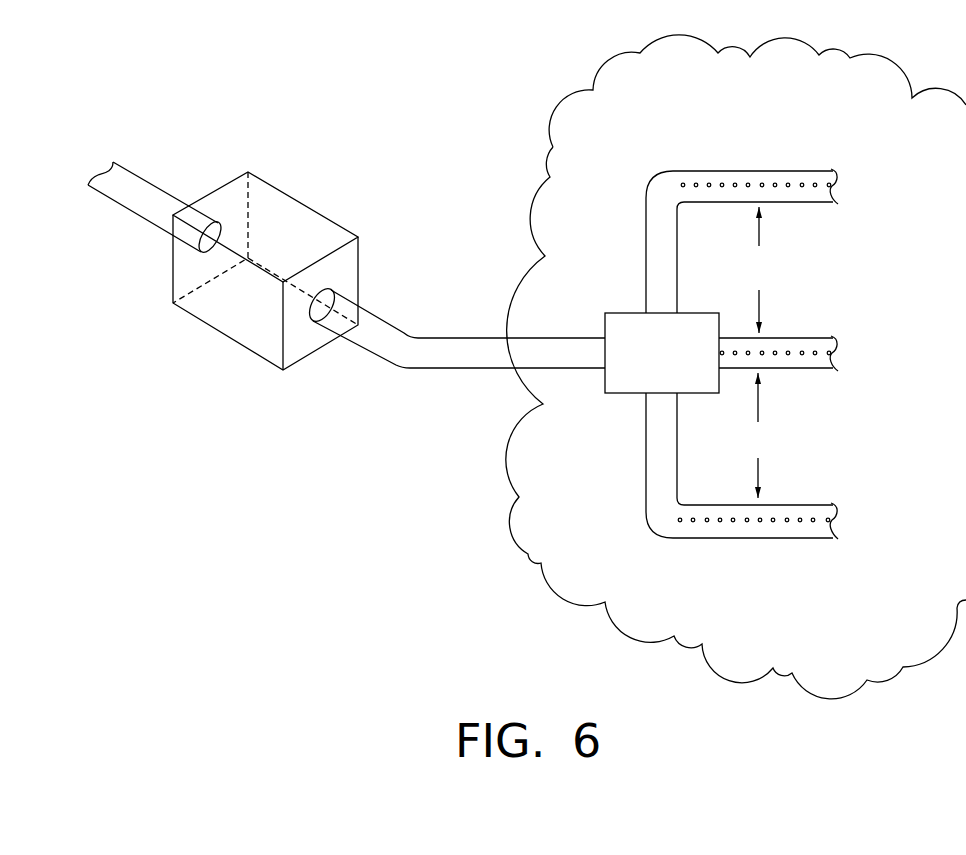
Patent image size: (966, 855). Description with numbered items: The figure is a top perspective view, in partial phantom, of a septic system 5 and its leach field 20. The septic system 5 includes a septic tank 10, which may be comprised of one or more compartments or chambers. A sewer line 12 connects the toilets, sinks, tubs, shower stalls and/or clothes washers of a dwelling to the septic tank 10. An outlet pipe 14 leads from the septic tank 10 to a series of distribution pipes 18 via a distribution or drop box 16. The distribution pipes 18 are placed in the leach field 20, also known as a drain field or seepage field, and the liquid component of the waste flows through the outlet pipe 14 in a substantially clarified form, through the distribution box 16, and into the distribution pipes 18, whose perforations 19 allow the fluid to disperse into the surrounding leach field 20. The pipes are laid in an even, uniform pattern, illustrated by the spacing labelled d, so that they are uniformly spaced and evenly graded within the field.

The septic system 5 is at (380, 82).
The septic tank 10 is at (327, 218).
The sewer line 12 is at (158, 184).
The outlet pipe 14 is at (427, 338).
The distribution box 16 is at (633, 313).
The distribution pipes 18 is at (775, 504).
The perforations 19 is at (725, 356).
The leach field 20 is at (914, 199).